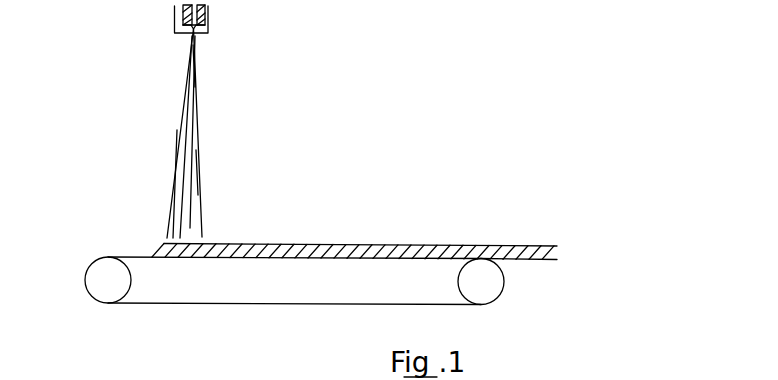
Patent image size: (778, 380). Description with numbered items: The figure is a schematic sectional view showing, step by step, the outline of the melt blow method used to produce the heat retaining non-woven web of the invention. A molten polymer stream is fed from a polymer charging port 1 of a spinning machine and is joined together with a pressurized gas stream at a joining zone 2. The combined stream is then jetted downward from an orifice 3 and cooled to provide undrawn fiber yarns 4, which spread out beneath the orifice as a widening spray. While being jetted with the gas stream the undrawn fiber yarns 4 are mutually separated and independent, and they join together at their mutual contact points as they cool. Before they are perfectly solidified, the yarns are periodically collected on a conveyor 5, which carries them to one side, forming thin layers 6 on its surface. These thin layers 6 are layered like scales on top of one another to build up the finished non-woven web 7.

The polymer charging port 1 is at (174, 13).
The joining zone 2 is at (210, 25).
The orifice 3 is at (190, 32).
The undrawn fiber yarns 4 is at (197, 133).
The conveyor 5 is at (120, 256).
The thin layers 6 is at (253, 243).
The non-woven web 7 is at (353, 244).